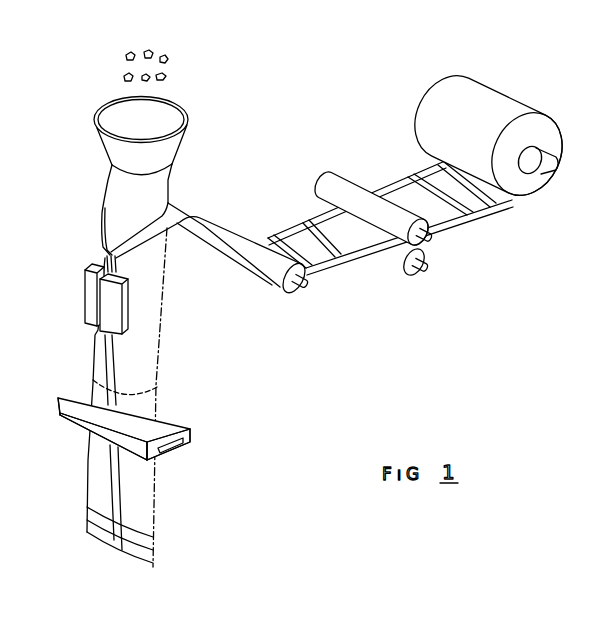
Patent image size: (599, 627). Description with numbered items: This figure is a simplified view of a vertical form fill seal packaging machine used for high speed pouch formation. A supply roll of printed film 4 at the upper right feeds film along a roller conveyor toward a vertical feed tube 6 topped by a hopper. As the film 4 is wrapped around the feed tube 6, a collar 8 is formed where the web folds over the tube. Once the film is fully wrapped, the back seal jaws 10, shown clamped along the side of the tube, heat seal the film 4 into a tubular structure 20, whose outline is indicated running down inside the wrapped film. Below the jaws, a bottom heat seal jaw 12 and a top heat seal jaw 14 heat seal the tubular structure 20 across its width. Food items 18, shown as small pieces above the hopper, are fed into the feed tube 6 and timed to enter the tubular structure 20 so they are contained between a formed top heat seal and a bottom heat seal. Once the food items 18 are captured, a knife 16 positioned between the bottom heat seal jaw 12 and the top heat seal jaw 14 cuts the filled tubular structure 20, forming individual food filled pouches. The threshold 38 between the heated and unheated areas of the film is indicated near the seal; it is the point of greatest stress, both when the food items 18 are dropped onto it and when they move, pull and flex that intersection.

The supply roll of printed film 4 is at (500, 75).
The feed tube 6 is at (182, 155).
The collar 8 is at (188, 195).
The back seal jaws 10 is at (83, 297).
The bottom heat seal jaw 12 is at (80, 403).
The top heat seal jaw 14 is at (77, 428).
The knife 16 is at (178, 452).
The food items 18 is at (175, 47).
The tubular structure 20 is at (155, 313).
The threshold 38 is at (153, 423).